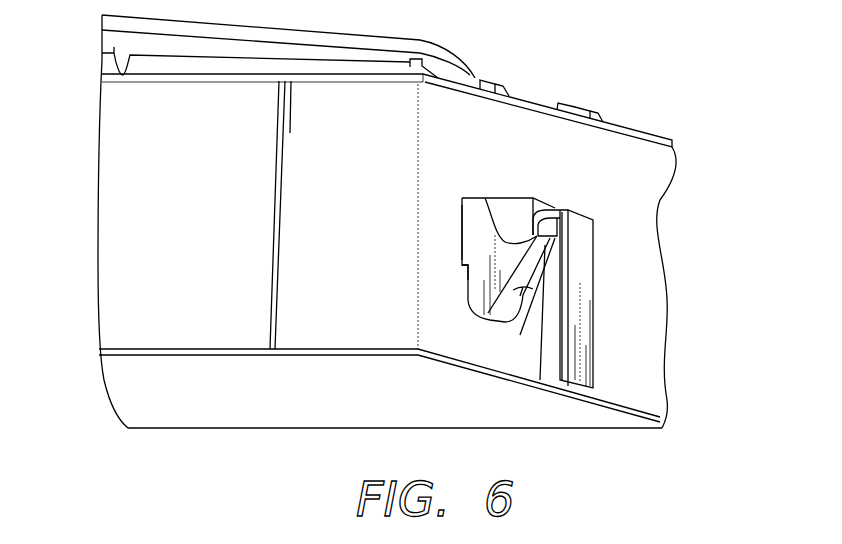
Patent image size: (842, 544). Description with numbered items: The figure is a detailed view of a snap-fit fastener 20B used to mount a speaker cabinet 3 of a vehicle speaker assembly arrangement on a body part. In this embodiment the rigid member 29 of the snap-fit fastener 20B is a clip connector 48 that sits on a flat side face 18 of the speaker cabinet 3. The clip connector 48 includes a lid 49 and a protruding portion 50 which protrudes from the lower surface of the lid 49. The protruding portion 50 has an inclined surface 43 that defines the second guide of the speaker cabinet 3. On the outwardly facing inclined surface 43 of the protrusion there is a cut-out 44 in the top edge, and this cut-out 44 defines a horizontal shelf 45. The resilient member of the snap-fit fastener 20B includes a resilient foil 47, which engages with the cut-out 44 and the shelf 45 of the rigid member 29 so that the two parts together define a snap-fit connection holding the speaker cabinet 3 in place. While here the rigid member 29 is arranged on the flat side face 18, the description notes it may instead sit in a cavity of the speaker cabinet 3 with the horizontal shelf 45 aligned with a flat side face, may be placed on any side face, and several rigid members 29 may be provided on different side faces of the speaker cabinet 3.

The speaker cabinet 3 is at (502, 64).
The side face 18 is at (620, 147).
The snap-fit fastener 20B is at (608, 197).
The rigid member 29 is at (460, 218).
The inclined surface 43 is at (520, 335).
The cut-out 44 is at (485, 198).
The horizontal shelf 45 is at (540, 380).
The resilient foil 47 is at (545, 222).
The clip connector 48 is at (467, 272).
The lid 49 is at (509, 198).
The protruding portion 50 is at (475, 313).